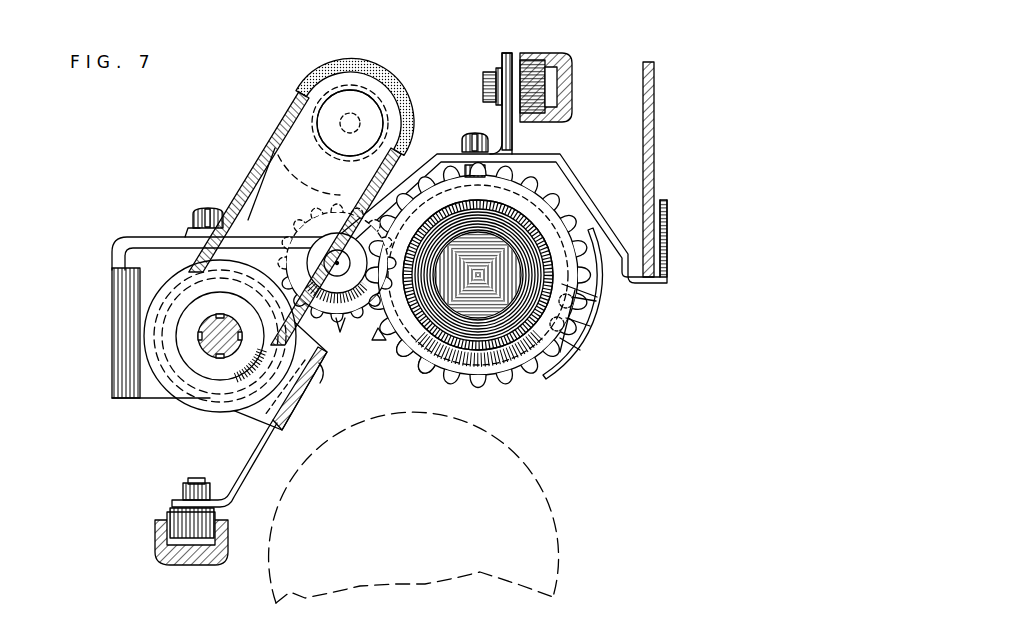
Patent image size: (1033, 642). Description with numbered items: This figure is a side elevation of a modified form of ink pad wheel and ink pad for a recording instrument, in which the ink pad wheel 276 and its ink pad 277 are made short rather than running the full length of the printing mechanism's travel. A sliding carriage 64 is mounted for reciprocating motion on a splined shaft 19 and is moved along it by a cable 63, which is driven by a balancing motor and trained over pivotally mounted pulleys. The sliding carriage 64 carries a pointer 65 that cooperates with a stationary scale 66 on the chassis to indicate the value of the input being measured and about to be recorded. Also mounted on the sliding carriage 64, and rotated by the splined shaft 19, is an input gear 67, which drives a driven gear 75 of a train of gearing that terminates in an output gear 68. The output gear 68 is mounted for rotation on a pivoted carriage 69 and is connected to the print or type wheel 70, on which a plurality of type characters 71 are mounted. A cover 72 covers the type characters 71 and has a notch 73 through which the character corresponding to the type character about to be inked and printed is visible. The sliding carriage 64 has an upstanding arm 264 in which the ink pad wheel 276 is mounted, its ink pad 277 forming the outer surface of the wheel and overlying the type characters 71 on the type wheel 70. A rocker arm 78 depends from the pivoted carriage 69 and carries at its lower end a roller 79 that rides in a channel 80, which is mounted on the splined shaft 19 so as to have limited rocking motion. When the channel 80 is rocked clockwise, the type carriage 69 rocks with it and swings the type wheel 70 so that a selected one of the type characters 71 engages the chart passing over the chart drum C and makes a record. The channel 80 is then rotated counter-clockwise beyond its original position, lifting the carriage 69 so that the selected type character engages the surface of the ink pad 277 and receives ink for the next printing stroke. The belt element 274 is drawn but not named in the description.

The splined shaft 19 is at (212, 345).
The cable 63 is at (190, 225).
The sliding carriage 64 is at (443, 152).
The pointer 65 is at (668, 218).
The stationary scale 66 is at (655, 108).
The input gear 67 is at (285, 300).
The output gear 68 is at (382, 336).
The pivoted carriage 69 is at (315, 387).
The type wheel 70 is at (508, 378).
The type characters 71 is at (425, 372).
The cover 72 is at (593, 315).
The notch 73 is at (562, 292).
The driven gear 75 is at (340, 325).
The rocker arm 78 is at (253, 458).
The roller 79 is at (178, 526).
The channel 80 is at (160, 547).
The upstanding arm 264 is at (362, 92).
The belt 274 is at (263, 165).
The ink pad wheel 276 is at (336, 108).
The ink pad 277 is at (318, 72).
The chart drum C is at (545, 487).